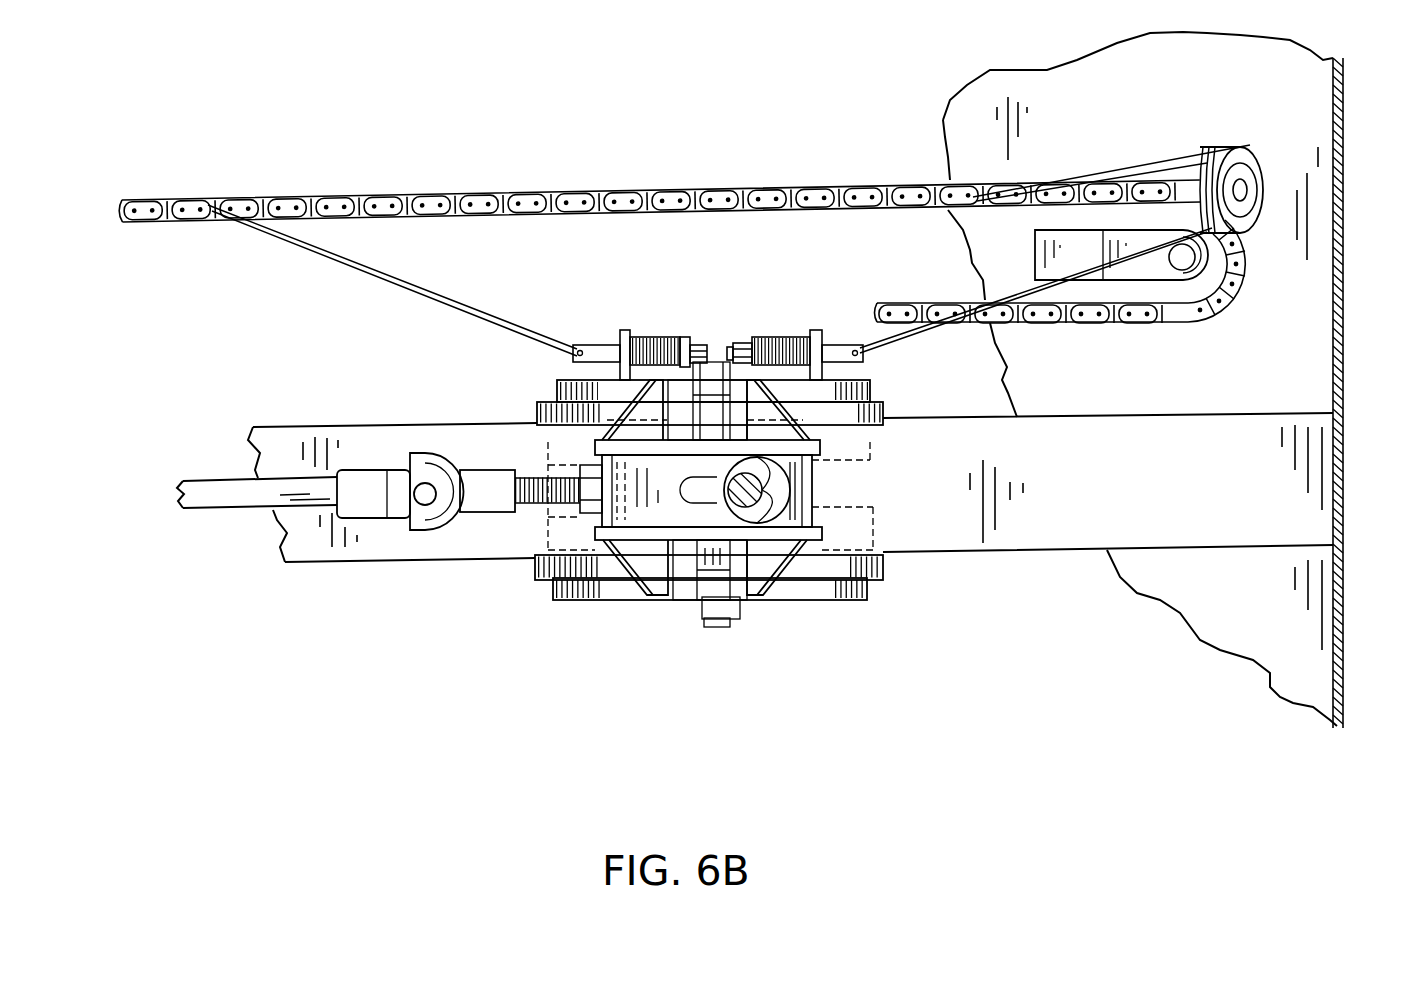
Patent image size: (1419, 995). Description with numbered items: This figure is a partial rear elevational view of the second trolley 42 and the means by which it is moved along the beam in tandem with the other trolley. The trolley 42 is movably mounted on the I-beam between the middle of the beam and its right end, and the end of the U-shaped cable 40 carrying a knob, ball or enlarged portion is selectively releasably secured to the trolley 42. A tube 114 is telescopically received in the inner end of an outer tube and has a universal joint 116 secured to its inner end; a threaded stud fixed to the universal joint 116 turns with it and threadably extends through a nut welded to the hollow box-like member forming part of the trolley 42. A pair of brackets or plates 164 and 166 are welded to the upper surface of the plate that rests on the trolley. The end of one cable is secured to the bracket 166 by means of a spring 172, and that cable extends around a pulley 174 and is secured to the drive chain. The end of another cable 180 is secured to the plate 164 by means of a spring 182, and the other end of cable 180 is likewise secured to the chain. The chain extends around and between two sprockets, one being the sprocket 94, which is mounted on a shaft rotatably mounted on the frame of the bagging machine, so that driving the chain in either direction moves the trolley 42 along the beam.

The U-shaped cable 40 is at (787, 481).
The trolley 42 is at (483, 378).
The sprocket 94 is at (1163, 287).
The tube 114 is at (247, 497).
The universal joint 116 is at (437, 503).
The bracket 164 is at (622, 335).
The bracket 166 is at (817, 332).
The spring 172 is at (783, 338).
The pulley 174 is at (1242, 147).
The cable 180 is at (413, 283).
The spring 182 is at (665, 340).